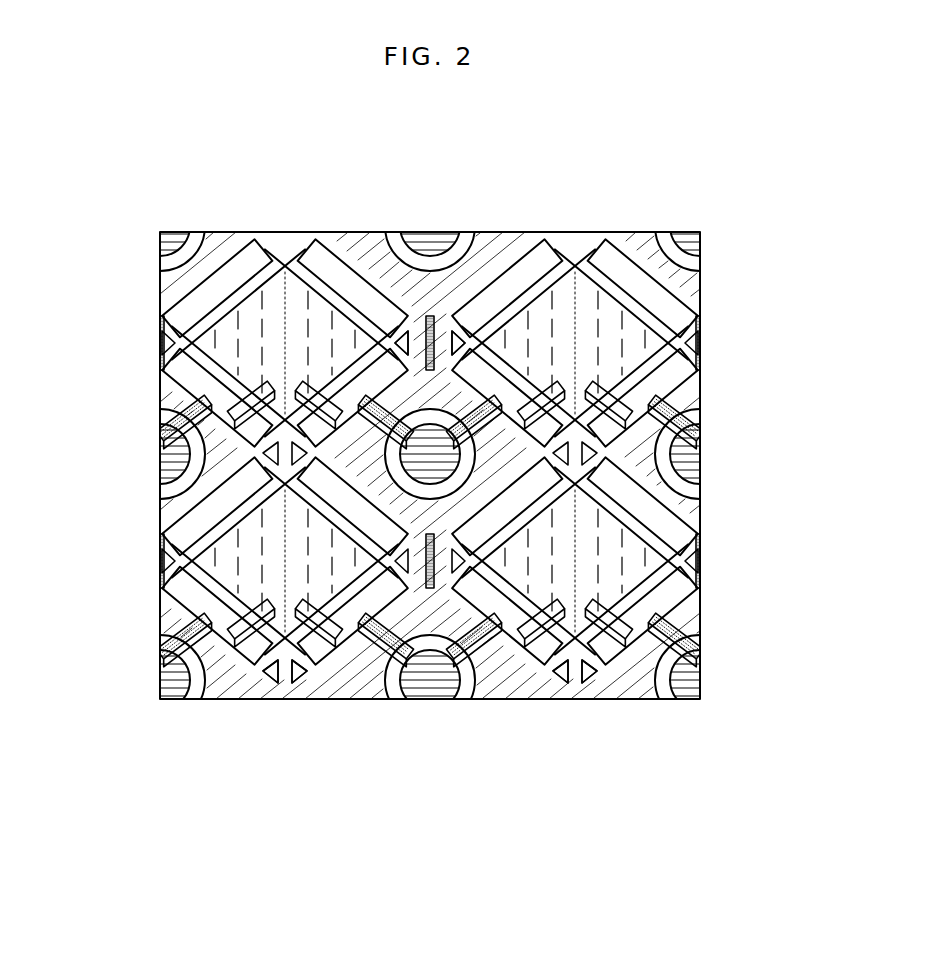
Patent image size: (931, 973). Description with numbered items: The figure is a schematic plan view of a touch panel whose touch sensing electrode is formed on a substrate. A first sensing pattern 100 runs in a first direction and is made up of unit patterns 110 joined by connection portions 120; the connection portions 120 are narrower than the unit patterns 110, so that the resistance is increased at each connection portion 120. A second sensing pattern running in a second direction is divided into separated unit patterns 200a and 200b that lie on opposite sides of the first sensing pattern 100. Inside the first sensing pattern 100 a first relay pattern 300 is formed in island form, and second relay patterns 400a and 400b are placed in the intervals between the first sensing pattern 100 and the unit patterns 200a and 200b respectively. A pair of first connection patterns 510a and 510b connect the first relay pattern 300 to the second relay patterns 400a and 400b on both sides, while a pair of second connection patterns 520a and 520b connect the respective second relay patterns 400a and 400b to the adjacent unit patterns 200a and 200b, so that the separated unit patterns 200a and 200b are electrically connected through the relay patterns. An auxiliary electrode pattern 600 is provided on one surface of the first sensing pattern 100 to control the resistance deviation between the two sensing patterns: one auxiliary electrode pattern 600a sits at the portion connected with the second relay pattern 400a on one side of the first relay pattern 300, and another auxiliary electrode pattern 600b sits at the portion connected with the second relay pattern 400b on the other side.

The first sensing pattern 100 is at (505, 762).
The unit pattern 110 is at (465, 650).
The connection portion 120 is at (390, 625).
The unit pattern of the second sensing pattern 200a is at (585, 290).
The unit pattern of the second sensing pattern 200b is at (283, 292).
The first relay pattern 300 is at (440, 460).
The second relay pattern 400a is at (470, 445).
The second relay pattern 400b is at (275, 458).
The first connection pattern 510a is at (462, 352).
The first connection pattern 510b is at (400, 352).
The second connection pattern 520a is at (530, 400).
The second connection pattern 520b is at (305, 398).
The auxiliary electrode pattern 600 is at (405, 640).
The auxiliary electrode pattern 600a is at (545, 685).
The auxiliary electrode pattern 600b is at (325, 688).